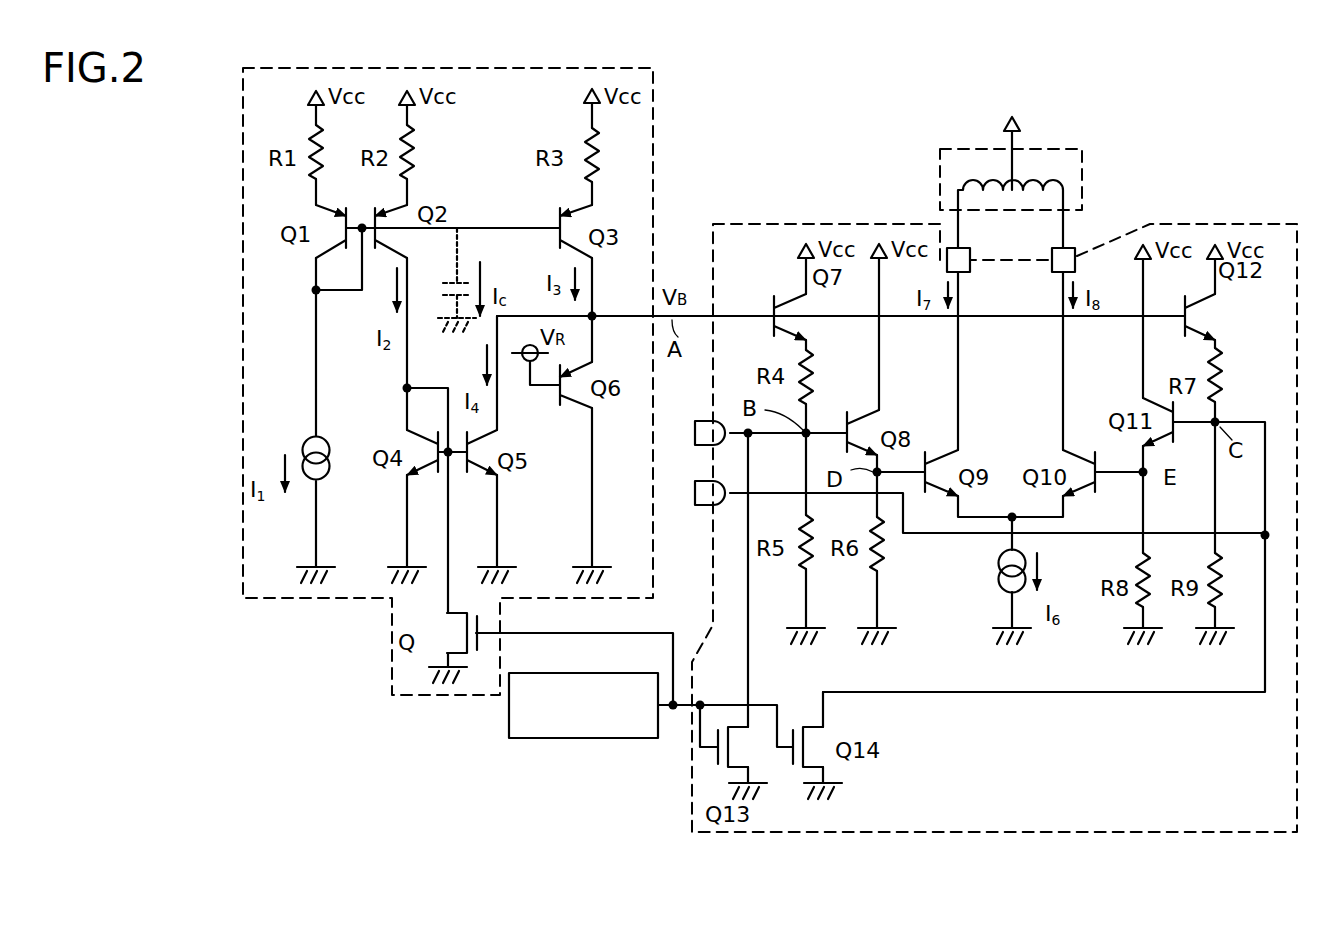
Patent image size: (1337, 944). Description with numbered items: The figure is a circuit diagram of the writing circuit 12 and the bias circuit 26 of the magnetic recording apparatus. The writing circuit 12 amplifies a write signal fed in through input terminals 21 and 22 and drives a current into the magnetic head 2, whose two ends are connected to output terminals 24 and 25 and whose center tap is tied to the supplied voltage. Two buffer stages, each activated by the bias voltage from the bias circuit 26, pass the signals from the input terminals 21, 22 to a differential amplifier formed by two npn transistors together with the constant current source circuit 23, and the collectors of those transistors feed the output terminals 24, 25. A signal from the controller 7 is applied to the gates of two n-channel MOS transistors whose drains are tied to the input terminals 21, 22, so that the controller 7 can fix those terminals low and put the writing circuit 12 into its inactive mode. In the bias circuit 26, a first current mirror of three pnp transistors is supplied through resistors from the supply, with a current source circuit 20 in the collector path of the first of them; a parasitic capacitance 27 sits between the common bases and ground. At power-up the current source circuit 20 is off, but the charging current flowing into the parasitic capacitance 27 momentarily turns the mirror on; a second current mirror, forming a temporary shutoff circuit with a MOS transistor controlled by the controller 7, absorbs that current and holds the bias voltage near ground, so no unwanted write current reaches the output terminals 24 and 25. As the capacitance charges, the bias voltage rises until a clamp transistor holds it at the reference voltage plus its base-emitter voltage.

The magnetic head 2 is at (1073, 150).
The controller 7 is at (558, 740).
The writing circuit 12 is at (1298, 325).
The current source circuit 20 is at (310, 438).
The input terminal 21 is at (703, 423).
The input terminal 22 is at (703, 483).
The constant current source circuit 23 is at (999, 584).
The output terminal 24 is at (972, 258).
The output terminal 25 is at (1078, 250).
The bias circuit 26 is at (355, 598).
The parasitic capacitance 27 is at (466, 287).